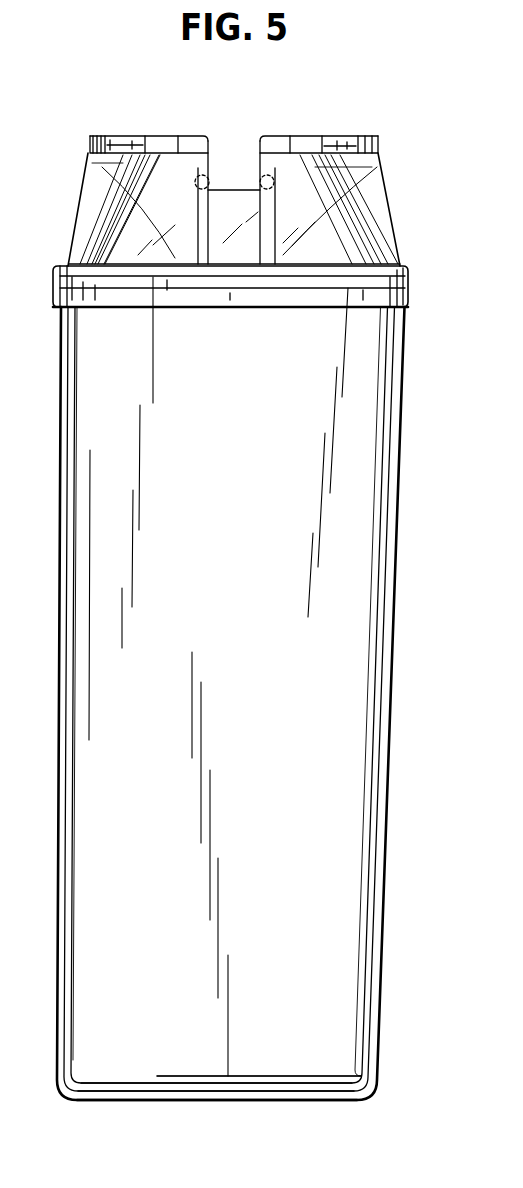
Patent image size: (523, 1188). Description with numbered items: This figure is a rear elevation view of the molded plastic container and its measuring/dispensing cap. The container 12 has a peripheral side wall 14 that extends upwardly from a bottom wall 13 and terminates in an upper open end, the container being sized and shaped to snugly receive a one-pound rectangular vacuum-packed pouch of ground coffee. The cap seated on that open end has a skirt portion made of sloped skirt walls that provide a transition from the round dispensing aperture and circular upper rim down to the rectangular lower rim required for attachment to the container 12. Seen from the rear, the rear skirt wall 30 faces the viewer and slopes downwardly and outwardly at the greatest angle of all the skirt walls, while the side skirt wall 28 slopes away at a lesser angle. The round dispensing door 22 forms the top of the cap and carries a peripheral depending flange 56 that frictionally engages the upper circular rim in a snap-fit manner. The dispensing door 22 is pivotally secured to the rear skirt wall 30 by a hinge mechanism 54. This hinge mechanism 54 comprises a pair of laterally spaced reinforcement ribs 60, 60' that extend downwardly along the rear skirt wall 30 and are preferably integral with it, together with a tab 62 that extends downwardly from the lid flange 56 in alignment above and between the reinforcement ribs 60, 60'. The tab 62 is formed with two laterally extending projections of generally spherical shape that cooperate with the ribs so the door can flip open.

The container 12 is at (400, 444).
The bottom wall 13 is at (236, 1103).
The peripheral side wall 14 is at (102, 662).
The dispensing door 22 is at (165, 143).
The side skirt wall 28 is at (80, 210).
The rear skirt wall 30 is at (292, 183).
The hinge mechanism 54 is at (200, 220).
The peripheral depending flange 56 is at (192, 150).
The reinforcement rib 60 is at (196, 258).
The reinforcement rib 60' is at (288, 258).
The tab 62 is at (240, 163).